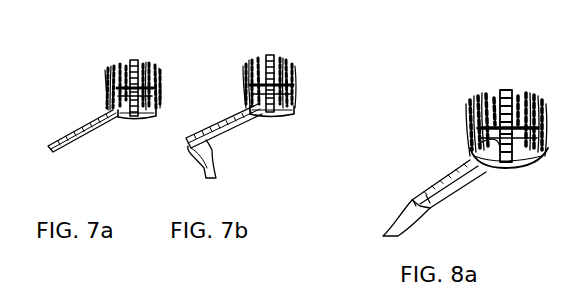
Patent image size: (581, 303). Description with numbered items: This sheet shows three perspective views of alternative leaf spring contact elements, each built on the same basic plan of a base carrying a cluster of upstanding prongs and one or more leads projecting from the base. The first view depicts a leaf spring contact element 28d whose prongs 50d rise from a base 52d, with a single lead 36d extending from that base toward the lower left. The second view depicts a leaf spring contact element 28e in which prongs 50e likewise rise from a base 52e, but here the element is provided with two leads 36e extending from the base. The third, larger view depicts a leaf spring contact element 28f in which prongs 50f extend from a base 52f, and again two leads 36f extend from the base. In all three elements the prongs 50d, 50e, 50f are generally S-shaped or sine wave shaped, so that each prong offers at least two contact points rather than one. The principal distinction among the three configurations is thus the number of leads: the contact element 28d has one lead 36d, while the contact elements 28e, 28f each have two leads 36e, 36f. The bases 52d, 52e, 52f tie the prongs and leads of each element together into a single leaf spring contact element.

In FIG. 7A, the leaf spring contact element 28d is at (62, 88).
In FIG. 7A, the prongs 50d is at (134, 61).
In FIG. 7A, the base 52d is at (134, 120).
In FIG. 7A, the lead 36d is at (49, 152).
In FIG. 7B, the leaf spring contact element 28e is at (312, 58).
In FIG. 7B, the prongs 50e is at (270, 55).
In FIG. 7B, the base 52e is at (283, 116).
In FIG. 7B, the leads 36e is at (224, 150).
In FIG. 8A, the leaf spring contact element 28f is at (446, 95).
In FIG. 8A, the prongs 50f is at (507, 92).
In FIG. 8A, the base 52f is at (514, 176).
In FIG. 8A, the leads 36f is at (413, 206).